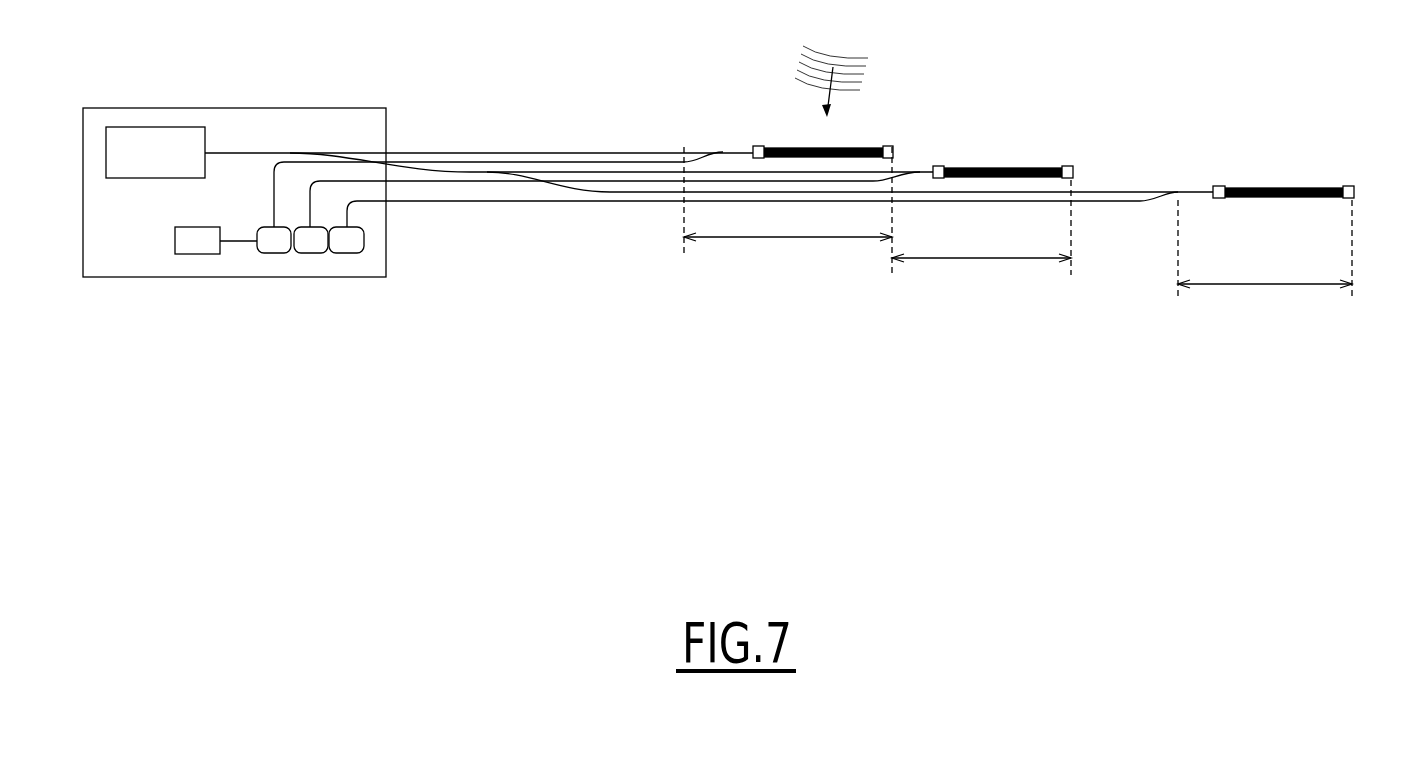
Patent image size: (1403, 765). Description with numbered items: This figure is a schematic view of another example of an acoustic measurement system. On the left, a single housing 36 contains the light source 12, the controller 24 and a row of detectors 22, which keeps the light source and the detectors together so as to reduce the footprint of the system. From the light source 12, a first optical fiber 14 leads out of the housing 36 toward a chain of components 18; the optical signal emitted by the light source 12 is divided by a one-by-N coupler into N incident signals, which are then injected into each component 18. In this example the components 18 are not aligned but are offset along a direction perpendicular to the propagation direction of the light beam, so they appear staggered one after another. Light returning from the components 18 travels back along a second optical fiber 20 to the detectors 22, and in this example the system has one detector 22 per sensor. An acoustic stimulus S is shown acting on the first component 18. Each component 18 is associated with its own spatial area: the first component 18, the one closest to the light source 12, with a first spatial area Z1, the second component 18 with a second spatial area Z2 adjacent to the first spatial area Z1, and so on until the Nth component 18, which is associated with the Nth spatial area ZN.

The light source 12 is at (145, 133).
The first optical fiber 14 is at (479, 139).
The component 18 is at (879, 128).
The second optical fiber 20 is at (443, 214).
The detector 22 is at (275, 253).
The controller 24 is at (190, 254).
The housing 36 is at (258, 115).
The stimulus S is at (824, 78).
The first spatial area Z1 is at (782, 240).
The second spatial area Z2 is at (983, 262).
The Nth spatial area ZN is at (1258, 288).